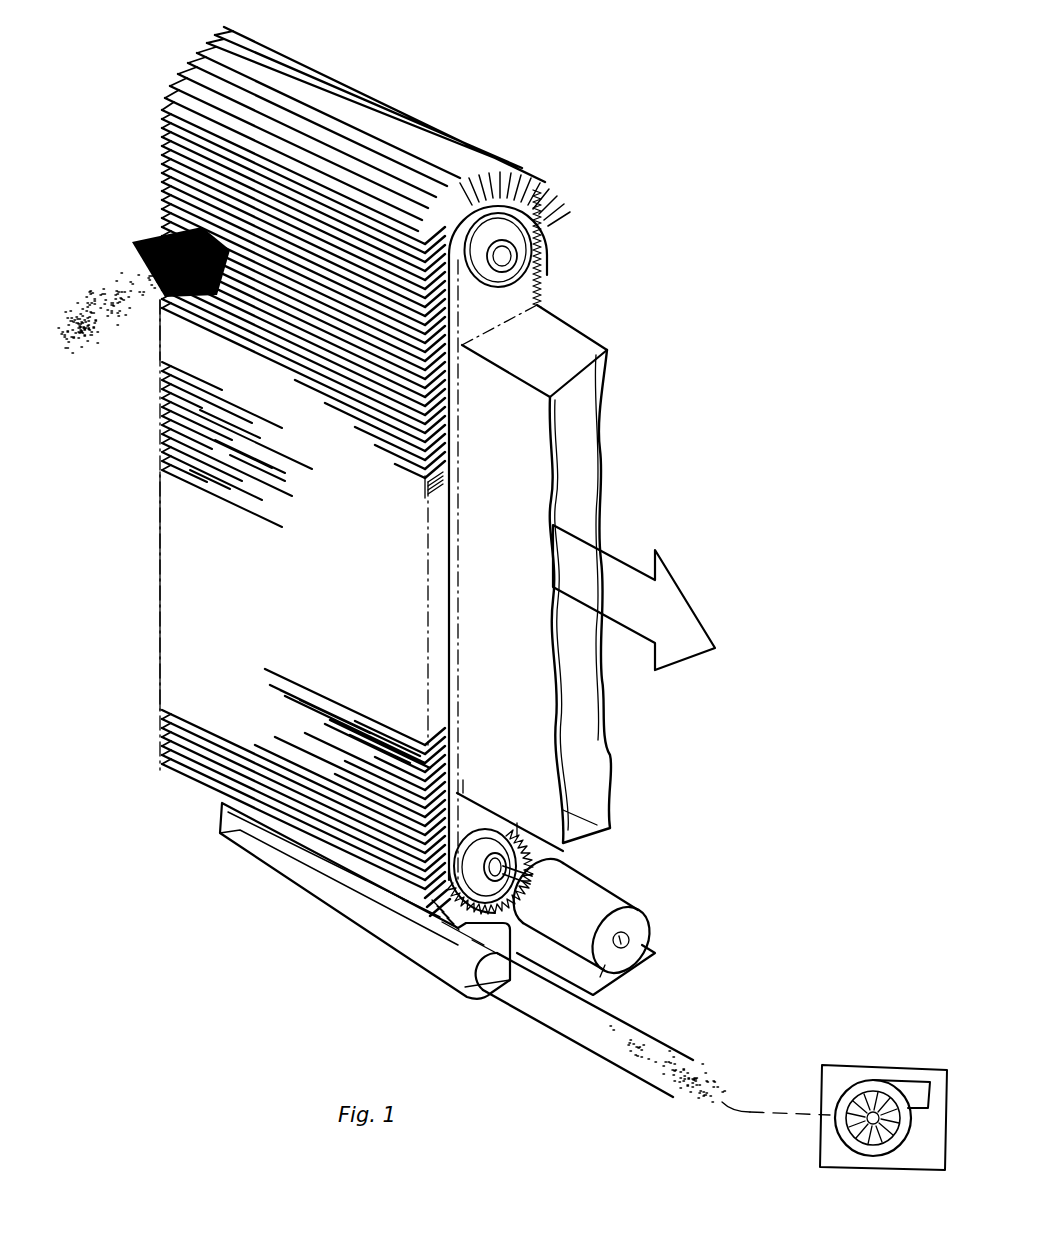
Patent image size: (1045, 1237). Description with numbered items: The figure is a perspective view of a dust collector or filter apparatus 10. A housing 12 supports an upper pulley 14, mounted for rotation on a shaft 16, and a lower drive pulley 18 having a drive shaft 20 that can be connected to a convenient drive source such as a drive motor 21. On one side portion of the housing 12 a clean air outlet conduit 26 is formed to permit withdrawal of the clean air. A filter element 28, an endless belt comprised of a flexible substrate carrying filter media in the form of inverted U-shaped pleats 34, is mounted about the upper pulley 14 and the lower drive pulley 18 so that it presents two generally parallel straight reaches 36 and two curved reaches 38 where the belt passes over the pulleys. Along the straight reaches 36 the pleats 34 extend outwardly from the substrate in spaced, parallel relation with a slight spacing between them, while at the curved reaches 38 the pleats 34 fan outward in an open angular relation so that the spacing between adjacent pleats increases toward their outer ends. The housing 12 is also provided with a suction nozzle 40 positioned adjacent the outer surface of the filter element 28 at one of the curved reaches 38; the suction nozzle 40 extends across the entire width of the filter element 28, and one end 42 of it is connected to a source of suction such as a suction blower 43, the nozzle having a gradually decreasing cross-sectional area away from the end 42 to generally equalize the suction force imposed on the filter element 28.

The dust collector or filter apparatus 10 is at (648, 491).
The housing 12 is at (523, 296).
The upper pulley 14 is at (518, 234).
The shaft 16 is at (505, 258).
The lower drive pulley 18 is at (478, 878).
The drive shaft 20 is at (447, 895).
The drive motor 21 is at (603, 901).
The clean air outlet conduit 26 is at (605, 408).
The filter element 28 is at (235, 550).
The pleats 34 is at (205, 45).
The straight reaches 36 is at (163, 412).
The curved reaches 38 is at (167, 105).
The suction nozzle 40 is at (437, 960).
The end 42 is at (563, 1015).
The suction blower 43 is at (843, 1090).